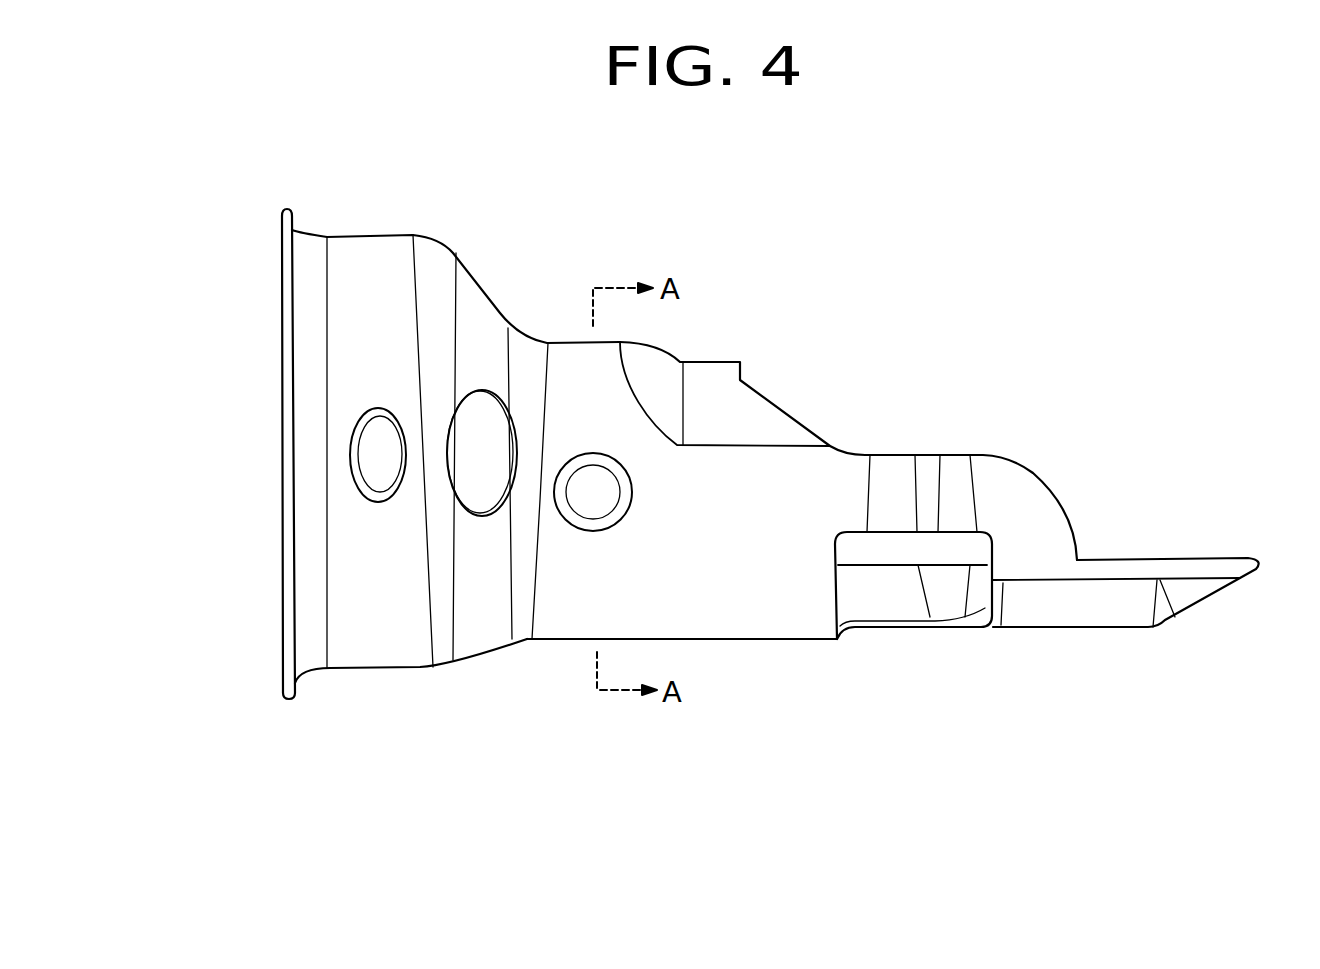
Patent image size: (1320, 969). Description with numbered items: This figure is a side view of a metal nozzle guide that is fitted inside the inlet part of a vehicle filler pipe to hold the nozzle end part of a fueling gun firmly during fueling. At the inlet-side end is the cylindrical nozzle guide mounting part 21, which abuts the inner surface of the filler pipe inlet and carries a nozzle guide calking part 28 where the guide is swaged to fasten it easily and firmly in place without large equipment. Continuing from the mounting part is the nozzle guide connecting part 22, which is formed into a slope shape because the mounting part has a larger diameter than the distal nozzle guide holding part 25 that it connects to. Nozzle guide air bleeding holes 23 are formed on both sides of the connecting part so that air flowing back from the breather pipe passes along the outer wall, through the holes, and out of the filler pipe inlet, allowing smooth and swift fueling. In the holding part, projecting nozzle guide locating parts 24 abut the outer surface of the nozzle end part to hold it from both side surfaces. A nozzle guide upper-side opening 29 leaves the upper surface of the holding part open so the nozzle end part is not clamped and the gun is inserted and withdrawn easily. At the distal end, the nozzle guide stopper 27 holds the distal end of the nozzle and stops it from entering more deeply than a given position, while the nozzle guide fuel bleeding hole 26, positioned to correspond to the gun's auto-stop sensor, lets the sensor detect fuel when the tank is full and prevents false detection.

The nozzle guide mounting part 21 is at (382, 633).
The nozzle guide connecting part 22 is at (478, 597).
The nozzle guide air bleeding hole 23 is at (483, 470).
The nozzle guide locating part 24 is at (593, 492).
The nozzle guide holding part 25 is at (762, 595).
The nozzle guide fuel bleeding hole 26 is at (918, 553).
The nozzle guide stopper 27 is at (1203, 563).
The nozzle guide calking part 28 is at (373, 450).
The nozzle guide upper-side opening 29 is at (807, 425).